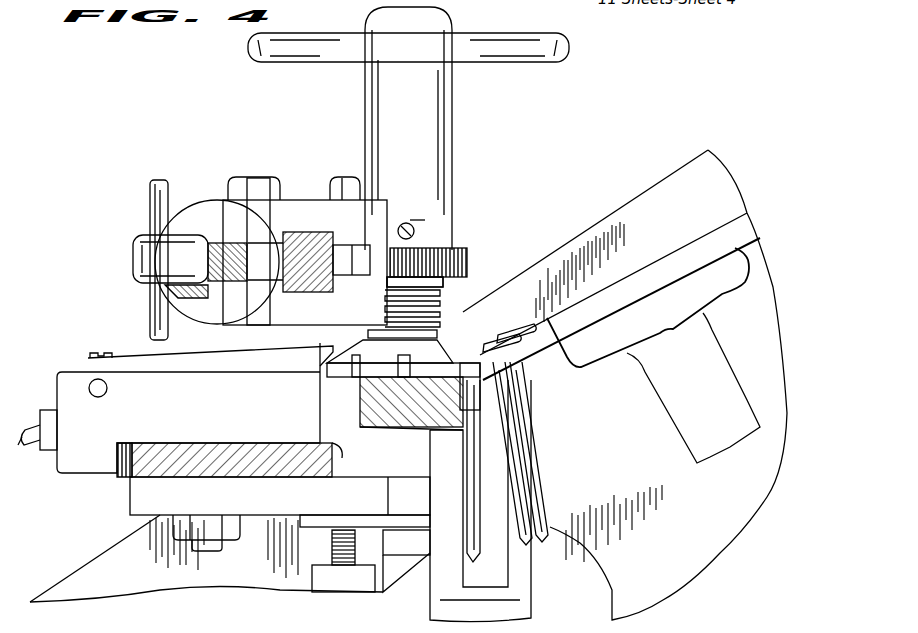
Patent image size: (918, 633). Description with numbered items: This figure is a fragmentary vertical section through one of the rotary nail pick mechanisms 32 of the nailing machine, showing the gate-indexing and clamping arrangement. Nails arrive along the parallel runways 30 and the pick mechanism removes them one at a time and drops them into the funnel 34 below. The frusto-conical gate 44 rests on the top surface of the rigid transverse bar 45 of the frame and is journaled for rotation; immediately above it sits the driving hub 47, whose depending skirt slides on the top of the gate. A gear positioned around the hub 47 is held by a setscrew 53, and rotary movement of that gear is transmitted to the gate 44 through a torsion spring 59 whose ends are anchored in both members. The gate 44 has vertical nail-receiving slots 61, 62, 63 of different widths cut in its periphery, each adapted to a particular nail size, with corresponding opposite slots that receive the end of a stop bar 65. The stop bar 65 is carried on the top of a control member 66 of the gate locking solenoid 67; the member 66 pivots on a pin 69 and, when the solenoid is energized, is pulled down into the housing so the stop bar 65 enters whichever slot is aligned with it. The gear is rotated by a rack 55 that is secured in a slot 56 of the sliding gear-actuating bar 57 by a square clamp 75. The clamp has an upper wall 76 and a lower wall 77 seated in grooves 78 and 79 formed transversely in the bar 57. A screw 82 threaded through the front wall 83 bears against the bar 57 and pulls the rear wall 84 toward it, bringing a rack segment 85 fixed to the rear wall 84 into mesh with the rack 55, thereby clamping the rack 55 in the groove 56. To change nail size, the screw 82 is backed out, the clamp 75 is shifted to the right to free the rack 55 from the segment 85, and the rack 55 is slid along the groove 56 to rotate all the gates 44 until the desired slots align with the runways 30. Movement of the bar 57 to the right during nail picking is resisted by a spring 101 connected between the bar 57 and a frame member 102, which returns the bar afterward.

The runway 30 is at (640, 268).
The rotary nail pick mechanism 32 is at (473, 240).
The funnel 34 is at (443, 588).
The gate 44 is at (355, 372).
The transverse bar 45 is at (403, 428).
The driving hub 47 is at (450, 287).
The setscrew 53 is at (422, 208).
The rack 55 is at (338, 277).
The slot 56 is at (383, 222).
The gear-actuating bar 57 is at (301, 232).
The torsion spring 59 is at (445, 292).
The nail-receiving slot 61 is at (450, 352).
The nail-receiving slot 62 is at (355, 416).
The nail-receiving slot 63 is at (365, 390).
The stop bar 65 is at (330, 350).
The control member 66 is at (203, 363).
The gate locking solenoid 67 is at (180, 418).
The pin 69 is at (103, 393).
The square clamp 75 is at (320, 200).
The upper wall 76 is at (270, 240).
The lower wall 77 is at (273, 280).
The groove 78 is at (320, 242).
The groove 79 is at (293, 292).
The screw 82 is at (170, 186).
The front wall 83 is at (257, 317).
The rear wall 84 is at (398, 208).
The rack segment 85 is at (365, 275).
The spring 101 is at (172, 298).
The frame member 102 is at (232, 198).